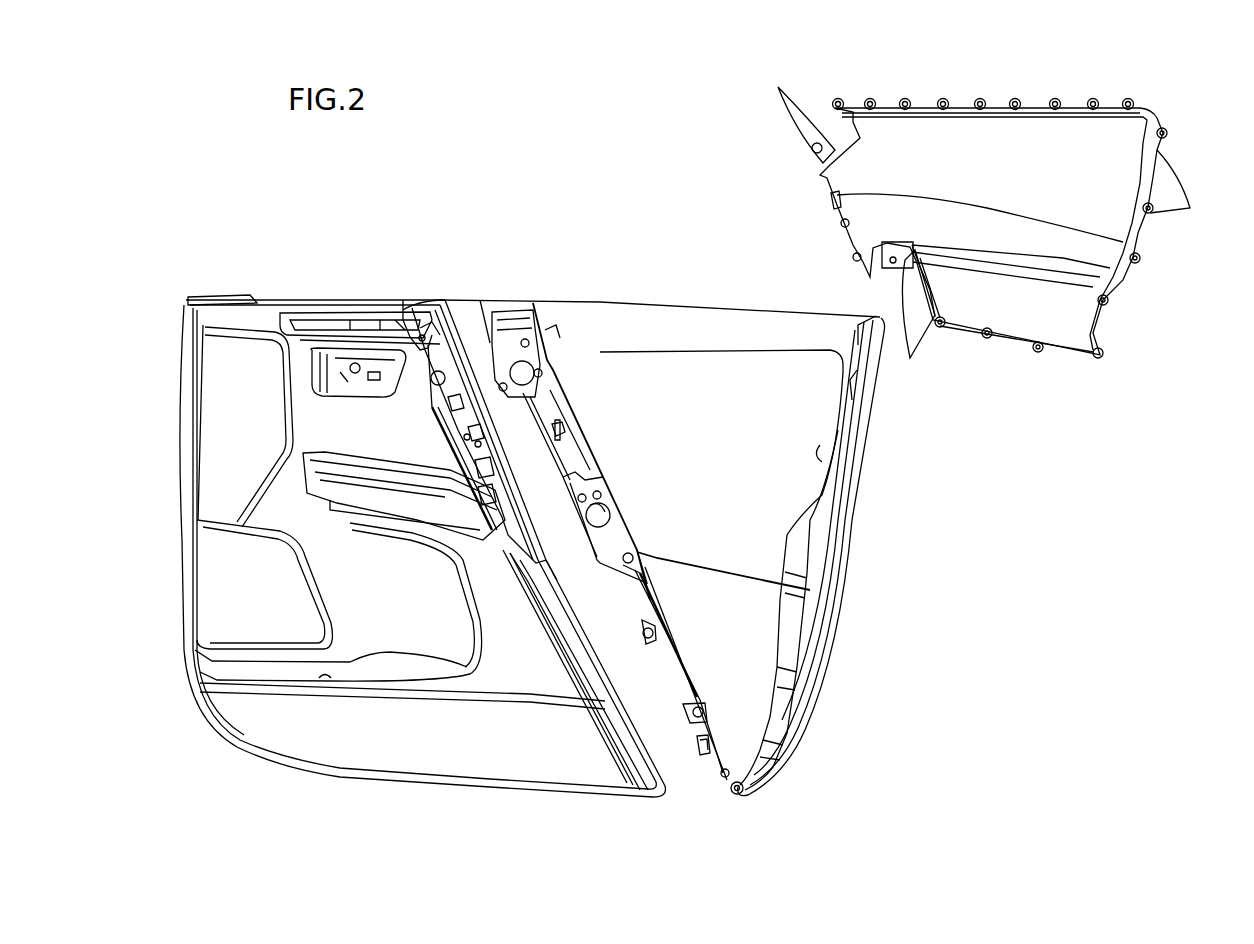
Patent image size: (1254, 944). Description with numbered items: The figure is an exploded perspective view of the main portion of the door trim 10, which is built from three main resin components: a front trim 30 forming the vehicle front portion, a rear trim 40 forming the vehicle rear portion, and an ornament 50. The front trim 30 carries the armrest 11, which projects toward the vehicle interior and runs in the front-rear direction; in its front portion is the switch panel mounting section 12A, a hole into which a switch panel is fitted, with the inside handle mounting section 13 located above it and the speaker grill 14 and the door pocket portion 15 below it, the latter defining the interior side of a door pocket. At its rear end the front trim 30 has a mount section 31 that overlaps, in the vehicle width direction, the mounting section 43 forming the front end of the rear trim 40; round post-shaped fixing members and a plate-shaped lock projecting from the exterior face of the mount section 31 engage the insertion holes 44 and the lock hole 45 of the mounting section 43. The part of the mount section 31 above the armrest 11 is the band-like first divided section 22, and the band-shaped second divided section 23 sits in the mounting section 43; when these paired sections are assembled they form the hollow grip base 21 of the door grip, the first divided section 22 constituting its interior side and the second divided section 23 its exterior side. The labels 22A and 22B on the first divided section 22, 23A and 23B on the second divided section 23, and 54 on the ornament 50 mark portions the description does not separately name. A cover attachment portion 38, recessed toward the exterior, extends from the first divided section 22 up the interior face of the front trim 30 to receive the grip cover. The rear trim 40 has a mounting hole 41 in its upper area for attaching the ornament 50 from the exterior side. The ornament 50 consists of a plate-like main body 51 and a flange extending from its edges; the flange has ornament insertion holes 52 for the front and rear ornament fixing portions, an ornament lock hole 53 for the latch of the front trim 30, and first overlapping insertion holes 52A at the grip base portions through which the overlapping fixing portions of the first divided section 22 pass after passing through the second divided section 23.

The door trim 10 is at (580, 158).
The armrest 11 is at (487, 478).
The switch panel mounting section 12A is at (300, 477).
The inside handle mounting section 13 is at (341, 360).
The speaker grill 14 is at (243, 598).
The door pocket portion 15 is at (325, 682).
The grip base 21 is at (425, 152).
The first divided section 22 is at (460, 310).
The first garnish upper end 22A is at (414, 302).
The first garnish lower end 22B is at (553, 517).
The second divided section 23 is at (540, 308).
The second garnish upper end 23A is at (487, 320).
The second garnish rear portion 23B is at (588, 468).
The front trim 30 is at (290, 278).
The mount section 31 is at (620, 540).
The cover attachment portion 38 is at (381, 305).
The rear trim 40 is at (668, 262).
The mounting hole 41 is at (830, 452).
The mounting section 43 is at (593, 565).
The insertion holes 44 is at (650, 634).
The lock hole 45 is at (708, 745).
The ornament 50 is at (1030, 390).
The main body 51 is at (990, 138).
The ornament insertion holes 52 is at (1150, 213).
The first overlapping insertion holes 52A is at (830, 118).
The ornament lock hole 53 is at (825, 205).
The lower panel ridge 54 is at (1057, 278).